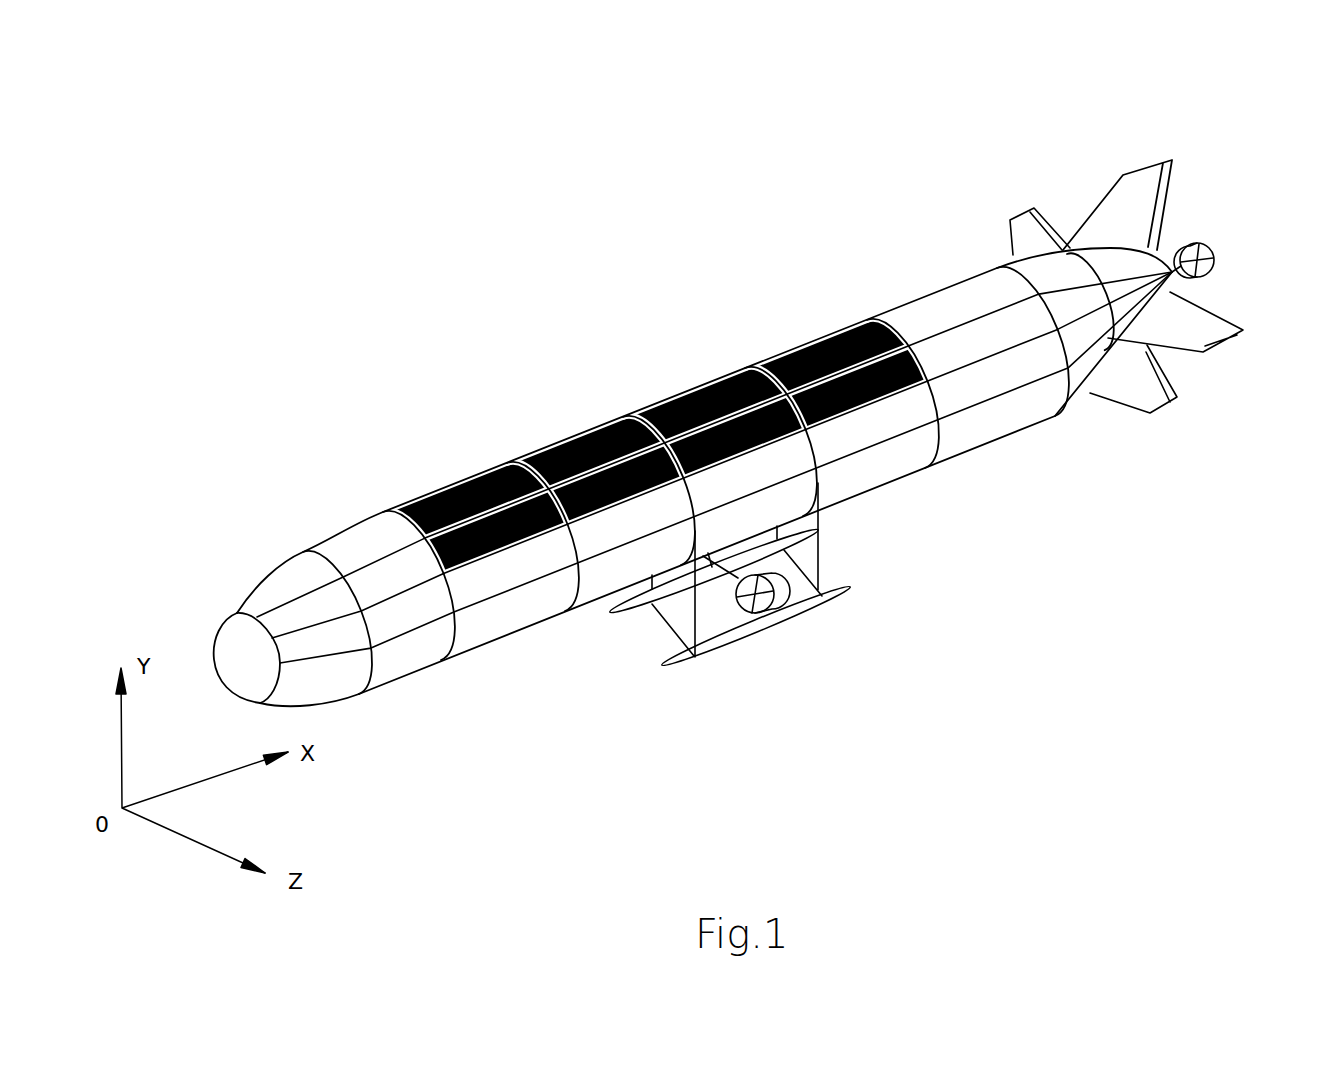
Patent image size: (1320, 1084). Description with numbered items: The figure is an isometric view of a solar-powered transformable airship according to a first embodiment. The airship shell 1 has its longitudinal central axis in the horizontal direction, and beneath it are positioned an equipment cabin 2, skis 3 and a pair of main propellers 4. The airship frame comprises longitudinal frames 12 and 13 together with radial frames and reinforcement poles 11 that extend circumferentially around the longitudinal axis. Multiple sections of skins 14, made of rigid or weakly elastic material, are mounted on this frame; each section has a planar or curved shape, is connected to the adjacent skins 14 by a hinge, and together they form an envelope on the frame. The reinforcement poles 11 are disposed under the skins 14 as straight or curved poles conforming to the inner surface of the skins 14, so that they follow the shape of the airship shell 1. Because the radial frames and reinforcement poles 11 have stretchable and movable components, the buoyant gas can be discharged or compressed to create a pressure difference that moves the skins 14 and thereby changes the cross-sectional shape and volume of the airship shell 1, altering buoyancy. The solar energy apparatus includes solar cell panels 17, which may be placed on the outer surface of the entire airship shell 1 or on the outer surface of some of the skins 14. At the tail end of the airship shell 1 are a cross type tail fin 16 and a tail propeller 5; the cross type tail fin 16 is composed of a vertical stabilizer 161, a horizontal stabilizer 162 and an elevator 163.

The airship shell 1 is at (343, 545).
The equipment cabin 2 is at (642, 600).
The skis 3 is at (843, 593).
The main propellers 4 is at (777, 617).
The tail propeller 5 is at (1203, 247).
The reinforcement poles 11 is at (570, 583).
The longitudinal frame 12 is at (290, 595).
The longitudinal frame 13 is at (1075, 320).
The skins 14 is at (940, 307).
The cross type tail fin 16 is at (1161, 239).
The solar cell panels 17 is at (550, 445).
The vertical stabilizer 161 is at (1110, 222).
The horizontal stabilizer 162 is at (1210, 340).
The elevator 163 is at (1230, 313).